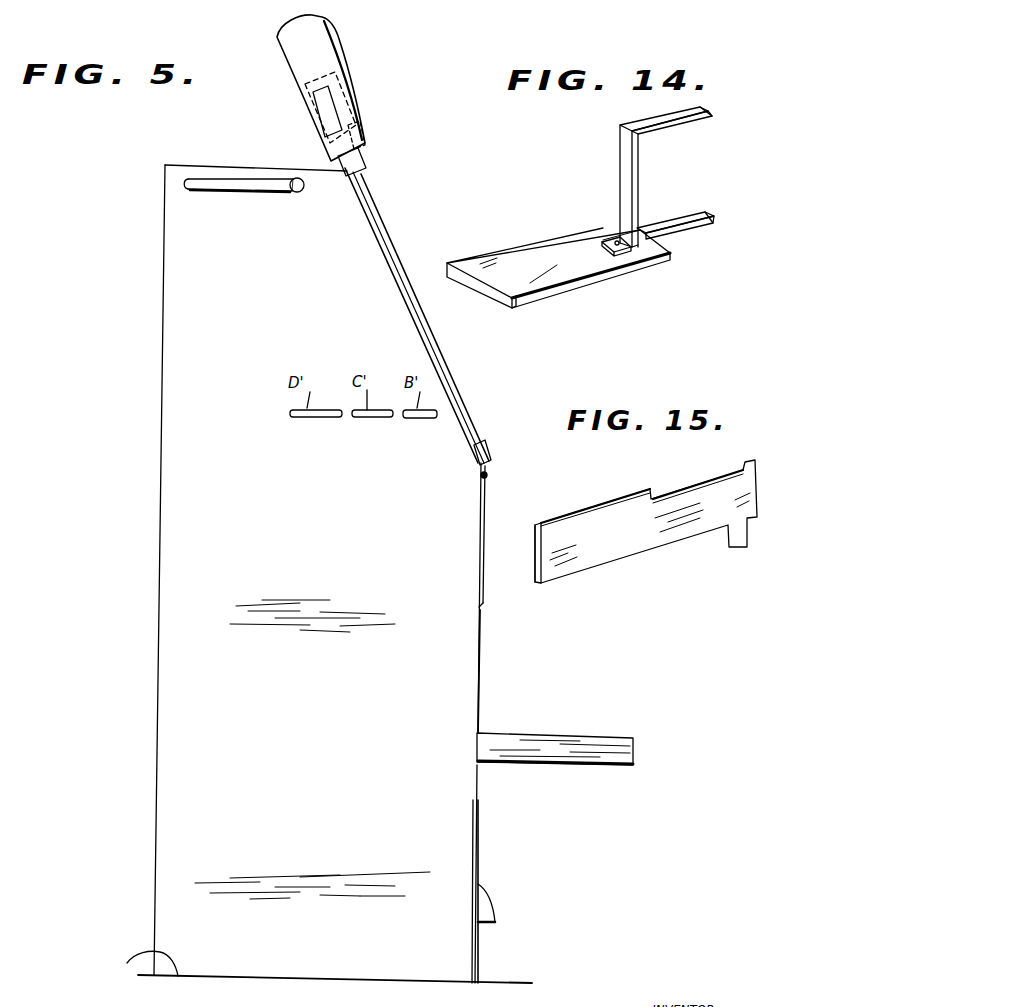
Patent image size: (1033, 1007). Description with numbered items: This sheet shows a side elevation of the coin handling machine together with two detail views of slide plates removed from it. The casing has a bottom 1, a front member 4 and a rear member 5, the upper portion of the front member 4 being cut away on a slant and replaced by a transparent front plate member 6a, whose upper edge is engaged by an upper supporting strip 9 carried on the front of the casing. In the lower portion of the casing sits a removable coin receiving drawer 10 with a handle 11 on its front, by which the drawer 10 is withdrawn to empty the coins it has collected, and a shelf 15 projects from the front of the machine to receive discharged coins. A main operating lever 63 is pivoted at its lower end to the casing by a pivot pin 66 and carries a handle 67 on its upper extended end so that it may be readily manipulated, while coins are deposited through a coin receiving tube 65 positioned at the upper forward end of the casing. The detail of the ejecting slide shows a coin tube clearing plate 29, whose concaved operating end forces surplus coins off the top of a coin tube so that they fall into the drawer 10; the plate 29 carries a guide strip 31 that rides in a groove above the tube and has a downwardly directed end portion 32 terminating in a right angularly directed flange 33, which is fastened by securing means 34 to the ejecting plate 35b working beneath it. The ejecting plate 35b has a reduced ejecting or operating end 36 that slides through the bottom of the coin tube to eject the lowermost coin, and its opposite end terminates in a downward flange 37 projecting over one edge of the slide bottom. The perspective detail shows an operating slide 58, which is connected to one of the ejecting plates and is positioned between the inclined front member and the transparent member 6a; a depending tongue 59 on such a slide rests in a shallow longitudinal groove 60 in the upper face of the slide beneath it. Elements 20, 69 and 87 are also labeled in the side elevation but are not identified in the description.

In FIG. 5, the bottom 1 is at (135, 958).
In FIG. 5, the front member 4 is at (482, 668).
In FIG. 5, the rear member 5 is at (155, 798).
In FIG. 5, the upper supporting strip 9 is at (372, 176).
In FIG. 5, the coin receiving drawer 10 is at (481, 860).
In FIG. 5, the handle 11 is at (494, 908).
In FIG. 5, the shelf 15 is at (594, 735).
In FIG. 5, the pin 20 is at (166, 165).
In FIG. 5, the transparent front plate member 6a is at (438, 336).
In FIG. 5, the main operating lever 63 is at (431, 351).
In FIG. 5, the coin receiving tube 65 is at (366, 158).
In FIG. 5, the pivot pin 66 is at (484, 605).
In FIG. 5, the handle 67 is at (341, 46).
In FIG. 5, the pivot 69 is at (487, 478).
In FIG. 5, the bracket 87 is at (486, 463).
In FIG. 14, the coin tube clearing plate 29 is at (633, 122).
In FIG. 14, the guide strip 31 is at (687, 125).
In FIG. 14, the downwardly directed end portion 32 is at (620, 181).
In FIG. 14, the outwardly directed flange 33 is at (617, 252).
In FIG. 14, the securing means 34 is at (616, 241).
In FIG. 14, the coin ejecting plate 35b is at (570, 284).
In FIG. 14, the reduced ejecting end 36 is at (687, 222).
In FIG. 14, the downward flange 37 is at (506, 307).
In FIG. 15, the operating slide 58 is at (622, 553).
In FIG. 15, the depending tongue 59 is at (740, 553).
In FIG. 15, the longitudinal groove 60 is at (700, 487).